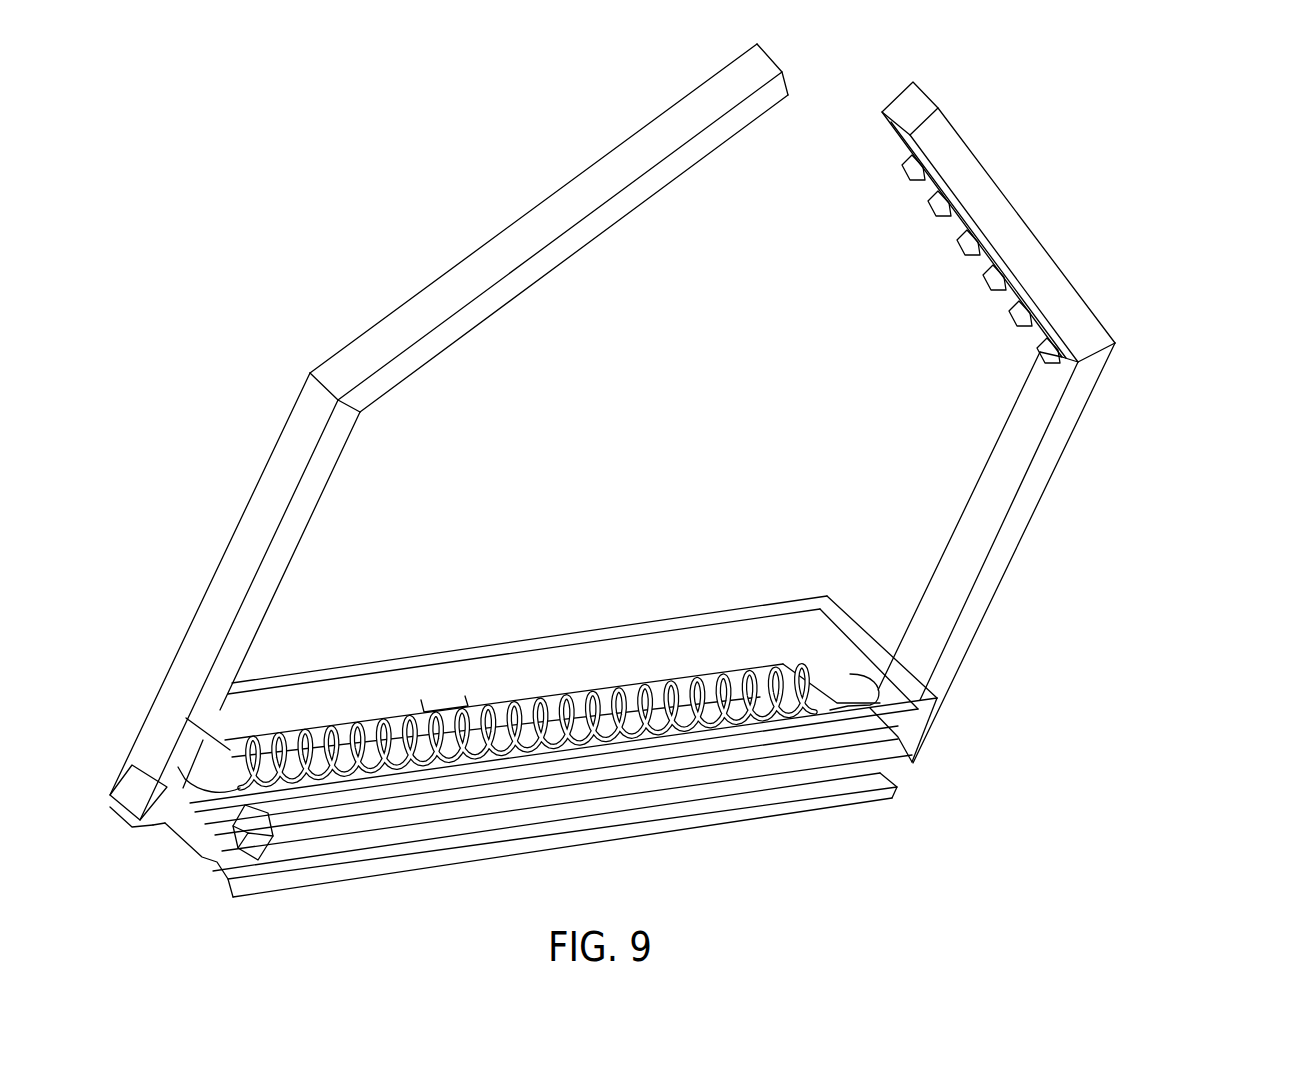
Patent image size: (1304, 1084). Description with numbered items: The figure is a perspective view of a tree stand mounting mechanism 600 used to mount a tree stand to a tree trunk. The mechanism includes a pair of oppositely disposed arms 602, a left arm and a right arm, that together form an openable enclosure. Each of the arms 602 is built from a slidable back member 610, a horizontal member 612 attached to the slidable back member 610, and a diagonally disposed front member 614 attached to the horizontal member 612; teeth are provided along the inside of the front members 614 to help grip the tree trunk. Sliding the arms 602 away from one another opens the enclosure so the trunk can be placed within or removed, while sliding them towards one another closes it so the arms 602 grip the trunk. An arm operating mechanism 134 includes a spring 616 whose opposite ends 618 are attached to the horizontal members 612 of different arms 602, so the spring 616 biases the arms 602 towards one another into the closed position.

The tree stand mounting mechanism 600 is at (1128, 634).
The arms 602 is at (651, 432).
The slidable back member 610 is at (693, 623).
The horizontal member 612 is at (242, 563).
The front members 614 is at (637, 145).
The spring 616 is at (598, 690).
The opposite ends of the spring 618 is at (183, 773).
The arm operating mechanism 134 is at (448, 705).